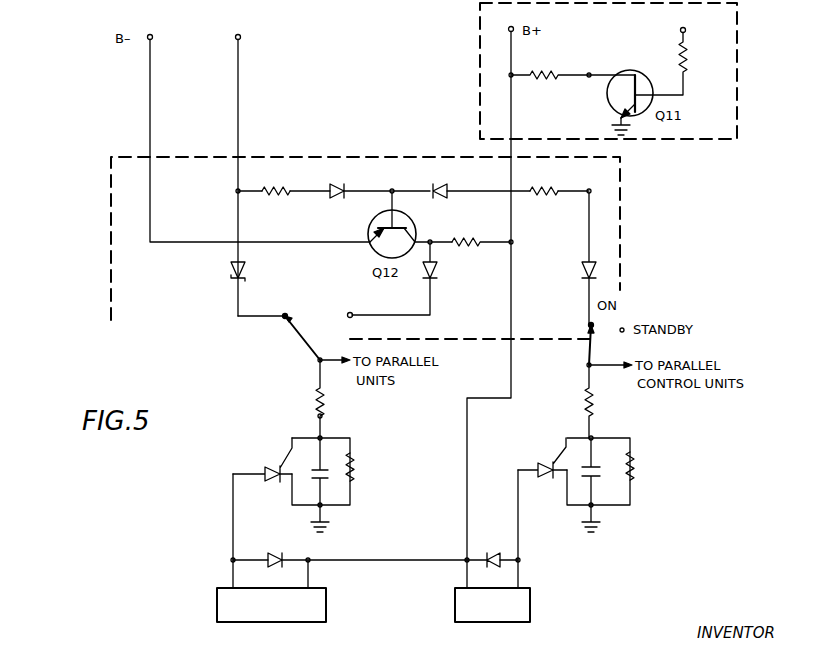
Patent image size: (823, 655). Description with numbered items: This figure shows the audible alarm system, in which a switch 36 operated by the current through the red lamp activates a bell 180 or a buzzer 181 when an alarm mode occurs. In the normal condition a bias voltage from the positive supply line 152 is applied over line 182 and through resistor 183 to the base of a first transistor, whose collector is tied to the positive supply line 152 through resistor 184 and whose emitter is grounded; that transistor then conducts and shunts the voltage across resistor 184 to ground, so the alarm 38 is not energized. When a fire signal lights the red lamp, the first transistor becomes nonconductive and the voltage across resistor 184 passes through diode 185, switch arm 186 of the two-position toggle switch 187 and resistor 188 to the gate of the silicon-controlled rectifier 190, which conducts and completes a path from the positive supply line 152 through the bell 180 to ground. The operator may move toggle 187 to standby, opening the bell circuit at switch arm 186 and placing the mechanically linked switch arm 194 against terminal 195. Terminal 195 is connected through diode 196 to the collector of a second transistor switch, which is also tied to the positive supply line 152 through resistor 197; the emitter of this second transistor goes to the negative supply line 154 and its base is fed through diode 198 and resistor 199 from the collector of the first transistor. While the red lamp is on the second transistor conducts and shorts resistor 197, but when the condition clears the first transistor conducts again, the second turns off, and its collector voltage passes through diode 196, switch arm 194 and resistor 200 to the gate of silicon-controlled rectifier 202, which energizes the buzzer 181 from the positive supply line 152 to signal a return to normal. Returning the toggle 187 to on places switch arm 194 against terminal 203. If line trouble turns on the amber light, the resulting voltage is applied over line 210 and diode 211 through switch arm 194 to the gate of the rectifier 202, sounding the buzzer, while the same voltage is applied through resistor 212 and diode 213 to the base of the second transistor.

The switch 36 is at (476, 70).
The alarm 38 is at (108, 222).
The positive supply line 152 is at (511, 55).
The negative supply line 154 is at (150, 108).
The bell 180 is at (525, 600).
The buzzer 181 is at (217, 592).
The line 182 is at (680, 32).
The resistor 183 is at (683, 57).
The resistor 184 is at (545, 82).
The diode 185 is at (580, 270).
The switch arm 186 is at (586, 352).
The two-position toggle switch 187 is at (553, 339).
The resistor 188 is at (585, 398).
The silicon-controlled rectifier 190 is at (548, 462).
The switch arm 194 is at (303, 342).
The terminal 195 is at (352, 317).
The diode 196 is at (437, 275).
The resistor 197 is at (472, 248).
The diode 198 is at (438, 198).
The resistor 199 is at (545, 197).
The resistor 200 is at (316, 404).
The silicon-controlled rectifier 202 is at (272, 464).
The terminal 203 is at (283, 319).
The line 210 is at (238, 103).
The diode 211 is at (230, 270).
The resistor 212 is at (272, 197).
The diode 213 is at (340, 198).